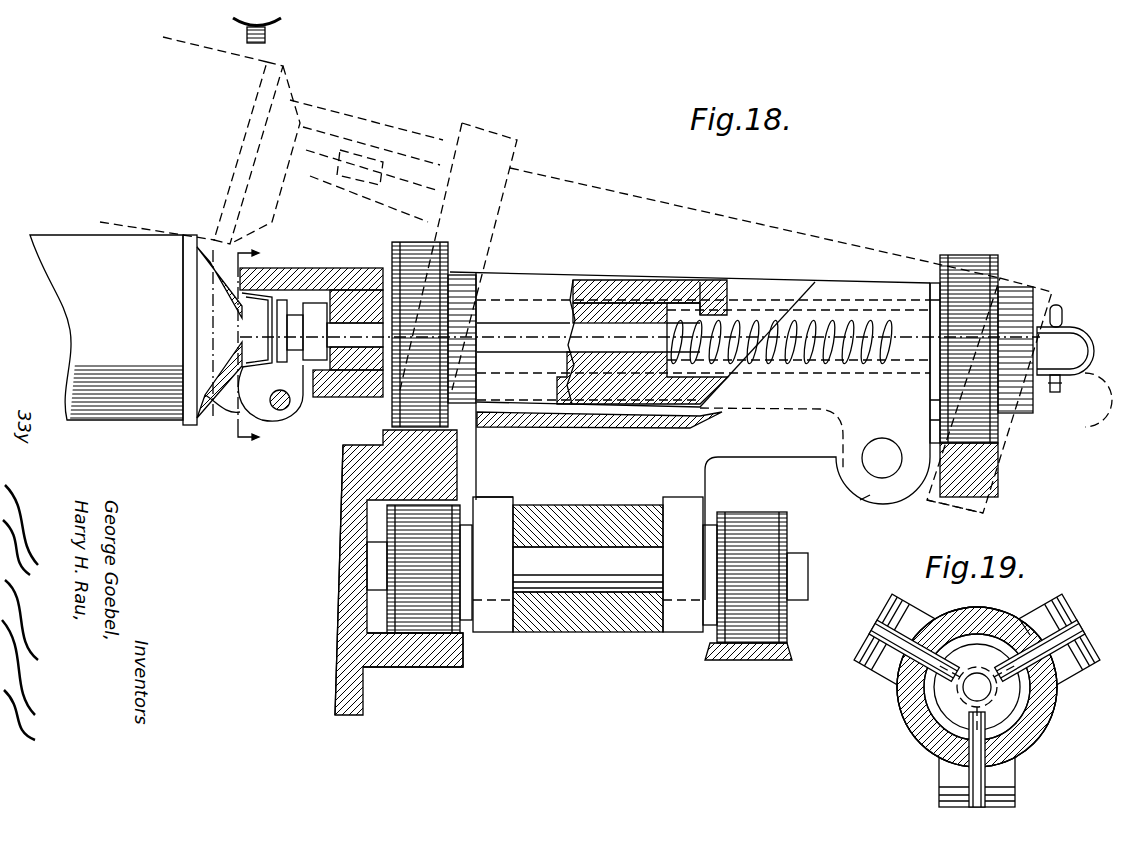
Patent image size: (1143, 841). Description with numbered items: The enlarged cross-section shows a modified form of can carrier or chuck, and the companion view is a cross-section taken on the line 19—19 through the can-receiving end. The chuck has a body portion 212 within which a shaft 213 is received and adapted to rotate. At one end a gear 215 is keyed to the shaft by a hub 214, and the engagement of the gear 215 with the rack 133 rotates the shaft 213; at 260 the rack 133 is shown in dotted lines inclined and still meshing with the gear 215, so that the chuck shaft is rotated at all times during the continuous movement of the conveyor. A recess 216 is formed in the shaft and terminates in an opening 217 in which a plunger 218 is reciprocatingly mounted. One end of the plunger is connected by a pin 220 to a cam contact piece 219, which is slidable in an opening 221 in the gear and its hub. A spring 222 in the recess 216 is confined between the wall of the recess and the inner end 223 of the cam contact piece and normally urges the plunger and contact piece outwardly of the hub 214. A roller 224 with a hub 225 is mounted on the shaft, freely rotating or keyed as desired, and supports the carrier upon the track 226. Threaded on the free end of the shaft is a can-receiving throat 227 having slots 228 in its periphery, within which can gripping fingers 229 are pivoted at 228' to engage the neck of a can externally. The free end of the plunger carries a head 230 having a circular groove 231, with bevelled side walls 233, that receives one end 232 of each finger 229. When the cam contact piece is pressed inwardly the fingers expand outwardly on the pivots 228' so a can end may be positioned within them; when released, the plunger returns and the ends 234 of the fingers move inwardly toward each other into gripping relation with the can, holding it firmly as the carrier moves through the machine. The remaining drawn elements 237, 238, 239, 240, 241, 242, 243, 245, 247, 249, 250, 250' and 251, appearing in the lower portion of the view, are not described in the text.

In FIG. 18, the section line 19 is at (261, 345).
In FIG. 18, the rack 133 is at (995, 486).
In FIG. 18, the body portion 212 is at (693, 287).
In FIG. 18, the shaft 213 is at (600, 310).
In FIG. 18, the hub 214 is at (1018, 298).
In FIG. 18, the gear 215 is at (967, 260).
In FIG. 18, the recess 216 is at (682, 320).
In FIG. 18, the opening 217 is at (540, 322).
In FIG. 18, the plunger 218 is at (603, 362).
In FIG. 18, the cam contact piece 219 is at (1080, 335).
In FIG. 18, the pin 220 is at (1060, 312).
In FIG. 18, the opening 221 is at (1088, 352).
In FIG. 18, the spring 222 is at (680, 330).
In FIG. 18, the inner end of cam contact piece 223 is at (900, 365).
In FIG. 18, the roller 224 is at (437, 257).
In FIG. 18, the hub 225 is at (466, 280).
In FIG. 18, the track 226 is at (347, 497).
In FIG. 18, the can-receiving throat 227 is at (348, 275).
In FIG. 19, the can-receiving throat 227 is at (920, 718).
In FIG. 18, the openings or slots 228 is at (287, 371).
In FIG. 19, the openings or slots 228 is at (977, 713).
In FIG. 18, the pivot pins 228' is at (280, 416).
In FIG. 18, the can gripping fingers 229 is at (257, 417).
In FIG. 19, the can gripping fingers 229 is at (1022, 628).
In FIG. 18, the head 230 is at (356, 330).
In FIG. 19, the head 230 is at (990, 700).
In FIG. 18, the circular groove 231 is at (240, 310).
In FIG. 18, the end of finger 232 is at (278, 330).
In FIG. 18, the inclined or bevelled side walls 233 is at (312, 372).
In FIG. 18, the ends of the fingers 234 is at (262, 355).
In FIG. 18, the face plate 237 is at (513, 470).
In FIG. 18, the collar 238 is at (492, 618).
In FIG. 18, the sleeve 239 is at (628, 615).
In FIG. 18, the collar 240 is at (500, 522).
In FIG. 18, the shaft 241 is at (588, 569).
In FIG. 18, the gear 242 is at (770, 505).
In FIG. 18, the cover 243 is at (688, 473).
In FIG. 18, the arm 245 is at (868, 500).
In FIG. 18, the hole 247 is at (890, 468).
In FIG. 18, the hub 249 is at (372, 612).
In FIG. 18, the bracket bar 250 is at (413, 667).
In FIG. 18, the bracket wall 250' is at (310, 580).
In FIG. 18, the support 251 is at (753, 652).
In FIG. 18, the dotted-line inclined rack position 260 is at (975, 512).